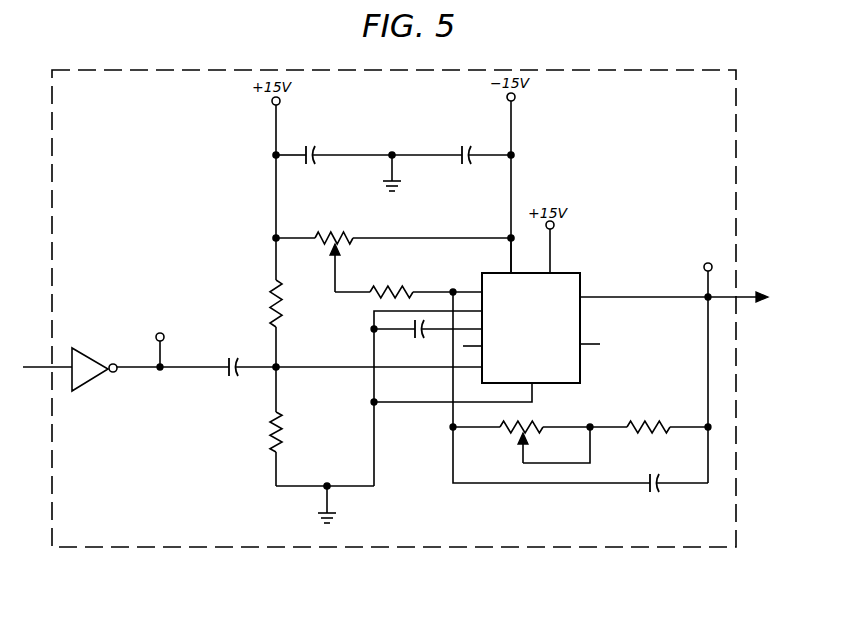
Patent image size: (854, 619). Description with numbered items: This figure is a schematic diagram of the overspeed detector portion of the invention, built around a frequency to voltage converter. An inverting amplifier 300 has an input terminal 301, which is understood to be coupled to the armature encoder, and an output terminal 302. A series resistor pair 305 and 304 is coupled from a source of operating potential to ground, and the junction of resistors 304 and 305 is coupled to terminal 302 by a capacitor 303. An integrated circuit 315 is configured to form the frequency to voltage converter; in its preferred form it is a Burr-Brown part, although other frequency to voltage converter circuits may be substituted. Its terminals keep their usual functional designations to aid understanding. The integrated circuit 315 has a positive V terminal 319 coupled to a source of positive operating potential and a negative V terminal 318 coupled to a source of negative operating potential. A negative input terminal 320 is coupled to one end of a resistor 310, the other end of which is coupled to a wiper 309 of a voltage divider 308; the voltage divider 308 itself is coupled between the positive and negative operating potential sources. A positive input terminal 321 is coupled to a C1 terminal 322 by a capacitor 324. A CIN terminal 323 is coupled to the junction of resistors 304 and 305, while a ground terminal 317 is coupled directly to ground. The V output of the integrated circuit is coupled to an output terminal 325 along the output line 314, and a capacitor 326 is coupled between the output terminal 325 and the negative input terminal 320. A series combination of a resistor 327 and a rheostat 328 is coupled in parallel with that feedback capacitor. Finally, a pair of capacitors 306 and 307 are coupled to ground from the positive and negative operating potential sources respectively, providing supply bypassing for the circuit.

The inverting amplifier 300 is at (90, 384).
The input terminal 301 is at (60, 367).
The output terminal 302 is at (135, 370).
The capacitor 303 is at (233, 357).
The resistor 304 is at (269, 432).
The resistor 305 is at (270, 302).
The capacitor 306 is at (314, 148).
The capacitor 307 is at (466, 147).
The voltage divider 308 is at (345, 236).
The wiper 309 is at (337, 272).
The resistor 310 is at (378, 300).
The output line 314 is at (583, 299).
The integrated circuit 315 is at (581, 279).
The ground terminal 317 is at (537, 386).
The negative V terminal 318 is at (512, 270).
The positive V terminal 319 is at (551, 272).
The negative input terminal 320 is at (482, 292).
The positive input terminal 321 is at (482, 311).
The C1 terminal 322 is at (481, 329).
The CIN terminal 323 is at (481, 366).
The capacitor 324 is at (421, 337).
The output terminal 325 is at (707, 300).
The capacitor 326 is at (657, 493).
The resistor 327 is at (660, 420).
The rheostat 328 is at (550, 387).